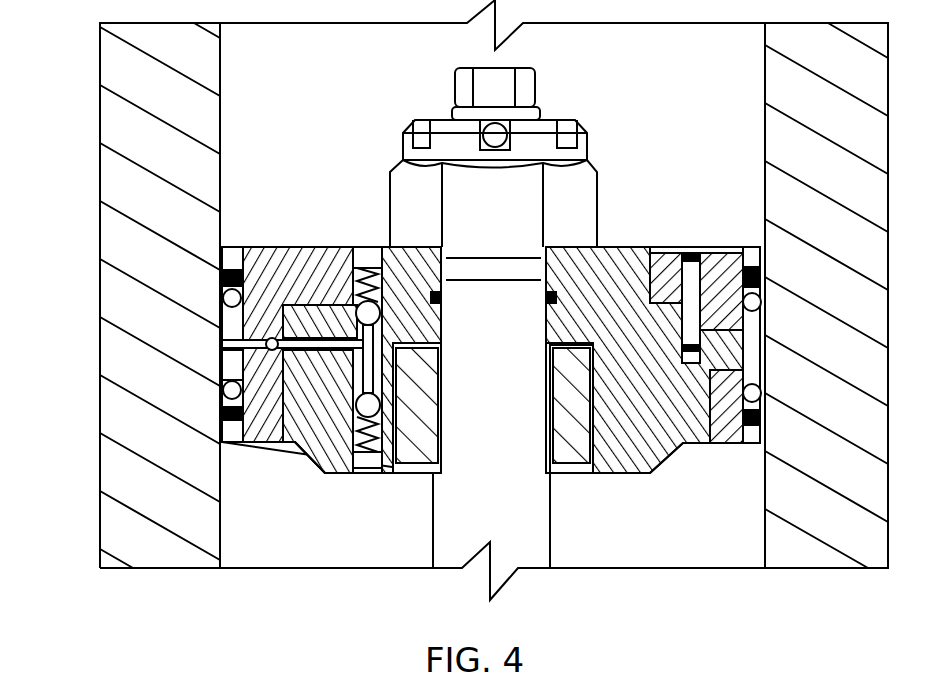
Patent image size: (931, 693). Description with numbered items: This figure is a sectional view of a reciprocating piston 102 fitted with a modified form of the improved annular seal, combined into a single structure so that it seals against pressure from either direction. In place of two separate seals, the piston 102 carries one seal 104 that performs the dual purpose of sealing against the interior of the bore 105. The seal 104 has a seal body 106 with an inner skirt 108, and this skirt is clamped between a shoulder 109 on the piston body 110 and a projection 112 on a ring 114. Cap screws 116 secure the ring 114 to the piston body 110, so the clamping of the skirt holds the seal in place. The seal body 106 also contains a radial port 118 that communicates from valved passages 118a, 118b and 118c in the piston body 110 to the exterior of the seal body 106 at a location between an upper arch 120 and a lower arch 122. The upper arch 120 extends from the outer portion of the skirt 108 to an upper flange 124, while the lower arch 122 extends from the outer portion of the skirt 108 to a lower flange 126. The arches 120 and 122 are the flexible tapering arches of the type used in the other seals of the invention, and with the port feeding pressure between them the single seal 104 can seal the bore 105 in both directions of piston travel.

The piston 102 is at (597, 148).
The seal 104 is at (222, 316).
The bore 105 is at (215, 60).
The seal body 106 is at (222, 372).
The inner skirt 108 is at (710, 372).
The shoulder 109 is at (283, 430).
The piston body 110 is at (342, 470).
The projection 112 is at (262, 305).
The ring 114 is at (240, 300).
The cap screws 116 is at (691, 255).
The radial port 118 is at (222, 342).
The valved passage 118a is at (437, 336).
The valved passage 118b is at (380, 407).
The valved passage 118c is at (326, 450).
The upper arch 120 is at (222, 295).
The lower arch 122 is at (222, 388).
The upper flange 124 is at (222, 278).
The lower flange 126 is at (222, 412).